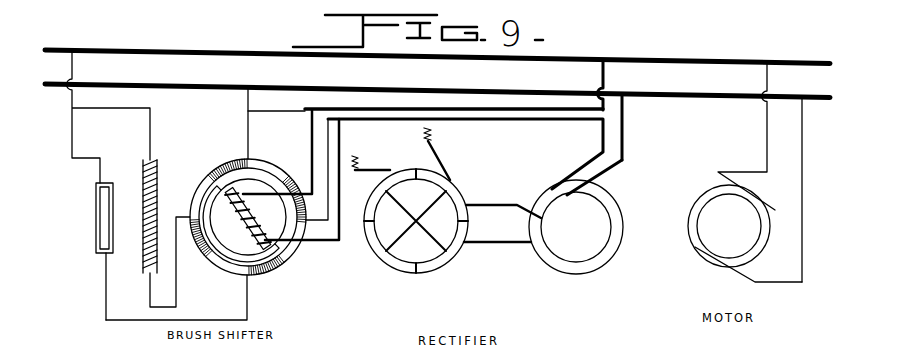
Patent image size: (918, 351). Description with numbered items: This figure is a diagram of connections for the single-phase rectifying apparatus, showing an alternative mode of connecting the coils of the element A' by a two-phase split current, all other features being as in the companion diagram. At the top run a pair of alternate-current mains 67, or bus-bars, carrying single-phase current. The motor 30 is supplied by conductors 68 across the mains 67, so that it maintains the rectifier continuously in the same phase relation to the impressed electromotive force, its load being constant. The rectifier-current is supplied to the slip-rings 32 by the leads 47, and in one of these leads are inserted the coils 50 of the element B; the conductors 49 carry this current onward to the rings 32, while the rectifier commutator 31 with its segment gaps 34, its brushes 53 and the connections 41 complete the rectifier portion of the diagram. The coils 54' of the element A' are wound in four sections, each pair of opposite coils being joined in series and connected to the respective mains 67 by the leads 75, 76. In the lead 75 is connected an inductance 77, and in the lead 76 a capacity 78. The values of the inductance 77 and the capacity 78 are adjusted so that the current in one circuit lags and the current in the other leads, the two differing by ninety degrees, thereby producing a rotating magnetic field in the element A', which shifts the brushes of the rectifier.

The motor 30 is at (745, 172).
The rectifier commutator 31 is at (416, 221).
The slip-rings 32 is at (576, 227).
The commutator segment gaps 34 is at (391, 260).
The rectifier connection conductors 41 is at (489, 213).
The leads 47 is at (624, 137).
The conductors to coil 32 49 is at (600, 167).
The coils of element B 50 is at (243, 221).
The rectifier brushes 53 is at (370, 168).
The coils of element A' 54' is at (251, 220).
The alternate-current mains 67 is at (662, 93).
The conductors 68 is at (800, 140).
The lead 75 is at (178, 276).
The lead 76 is at (214, 317).
The inductance 77 is at (157, 192).
The capacity 78 is at (96, 241).
The element A' is at (241, 243).
The element B is at (237, 192).